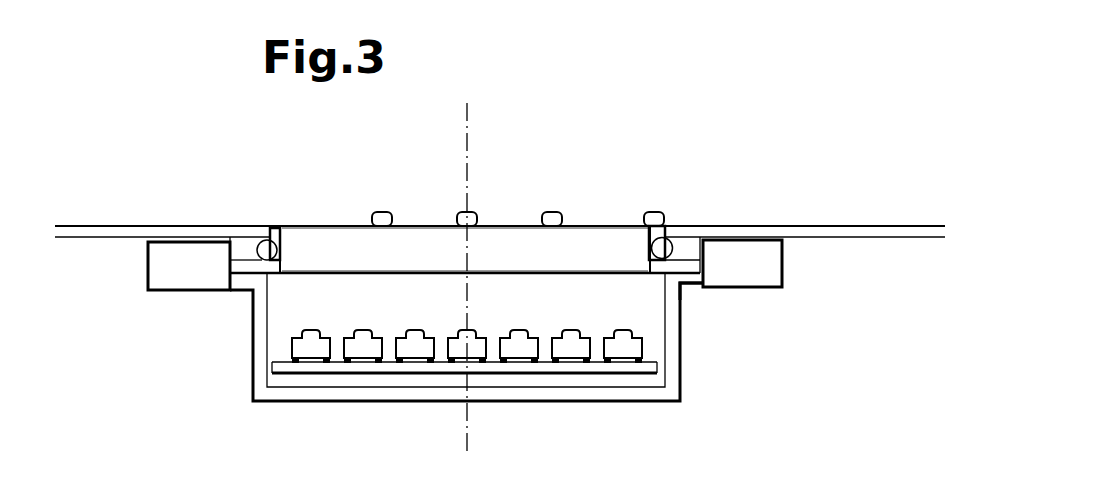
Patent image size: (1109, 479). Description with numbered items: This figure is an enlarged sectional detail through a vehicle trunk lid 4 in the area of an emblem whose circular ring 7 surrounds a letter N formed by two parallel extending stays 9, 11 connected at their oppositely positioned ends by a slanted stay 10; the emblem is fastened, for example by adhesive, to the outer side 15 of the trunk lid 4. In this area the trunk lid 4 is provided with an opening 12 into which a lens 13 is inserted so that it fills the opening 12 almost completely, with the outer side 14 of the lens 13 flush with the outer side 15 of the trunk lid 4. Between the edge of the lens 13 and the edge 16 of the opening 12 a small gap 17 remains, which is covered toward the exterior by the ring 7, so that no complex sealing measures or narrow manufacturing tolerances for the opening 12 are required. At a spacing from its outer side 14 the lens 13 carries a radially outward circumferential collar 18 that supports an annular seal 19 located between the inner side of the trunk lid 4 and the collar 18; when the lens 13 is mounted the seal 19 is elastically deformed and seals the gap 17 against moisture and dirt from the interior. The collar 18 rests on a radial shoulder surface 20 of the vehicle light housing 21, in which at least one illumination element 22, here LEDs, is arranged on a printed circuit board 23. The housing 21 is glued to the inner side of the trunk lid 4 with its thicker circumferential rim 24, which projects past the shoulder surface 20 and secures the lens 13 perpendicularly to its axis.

The trunk lid 4 is at (830, 222).
The circular ring 7 is at (657, 218).
The parallel stay 9 is at (382, 214).
The slanted stay 10 is at (470, 213).
The parallel stay 11 is at (557, 214).
The opening 12 is at (223, 226).
The lens 13 is at (330, 249).
The outer side of the lens 14 is at (602, 224).
The outer side of the trunk lid 15 is at (888, 224).
The edge of the opening 16 is at (660, 232).
The gap 17 is at (255, 258).
The circumferential collar 18 is at (247, 268).
The annular seal 19 is at (665, 250).
The radial shoulder surface 20 is at (686, 292).
The vehicle light housing 21 is at (650, 410).
The illumination element 22 is at (460, 348).
The printed circuit board 23 is at (533, 370).
The circumferential rim 24 is at (742, 262).